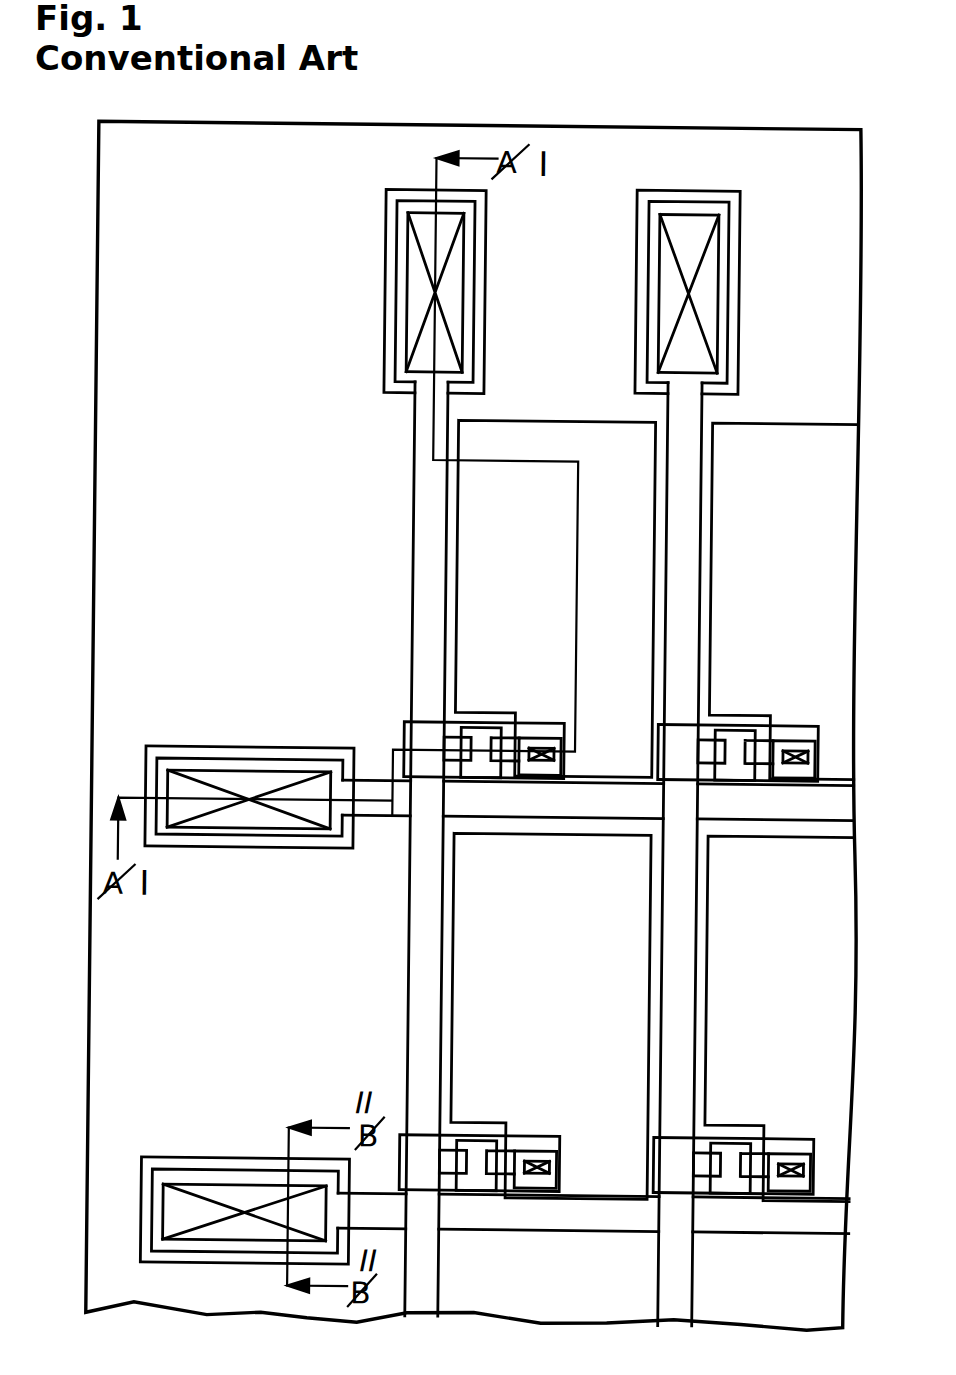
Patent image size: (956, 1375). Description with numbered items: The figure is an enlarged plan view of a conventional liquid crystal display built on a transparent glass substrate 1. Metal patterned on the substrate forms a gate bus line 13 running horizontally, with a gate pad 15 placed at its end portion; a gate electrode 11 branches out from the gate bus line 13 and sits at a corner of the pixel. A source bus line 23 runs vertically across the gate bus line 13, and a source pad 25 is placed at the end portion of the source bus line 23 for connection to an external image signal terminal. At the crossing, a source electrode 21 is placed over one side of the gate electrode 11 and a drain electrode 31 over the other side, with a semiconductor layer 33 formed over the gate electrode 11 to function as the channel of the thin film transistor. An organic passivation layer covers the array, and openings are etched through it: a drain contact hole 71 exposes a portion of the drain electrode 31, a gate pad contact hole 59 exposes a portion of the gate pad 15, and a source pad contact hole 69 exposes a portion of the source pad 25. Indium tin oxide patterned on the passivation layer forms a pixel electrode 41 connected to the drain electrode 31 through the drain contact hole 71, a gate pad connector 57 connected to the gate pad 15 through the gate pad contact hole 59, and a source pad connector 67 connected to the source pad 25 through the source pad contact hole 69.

The transparent glass substrate 1 is at (225, 154).
The gate electrode 11 is at (481, 729).
The gate bus line 13 is at (602, 1216).
The gate pad 15 is at (215, 762).
The source electrode 21 is at (464, 1160).
The source bus line 23 is at (424, 626).
The source pad 25 is at (378, 280).
The drain electrode 31 is at (797, 741).
The semiconductor layer 33 is at (732, 1137).
The pixel electrode 41 is at (556, 429).
The gate pad connector 57 is at (318, 759).
The gate pad contact hole 59 is at (177, 1193).
The source pad connector 67 is at (733, 255).
The source pad contact hole 69 is at (713, 315).
The drain contact hole 71 is at (819, 1144).